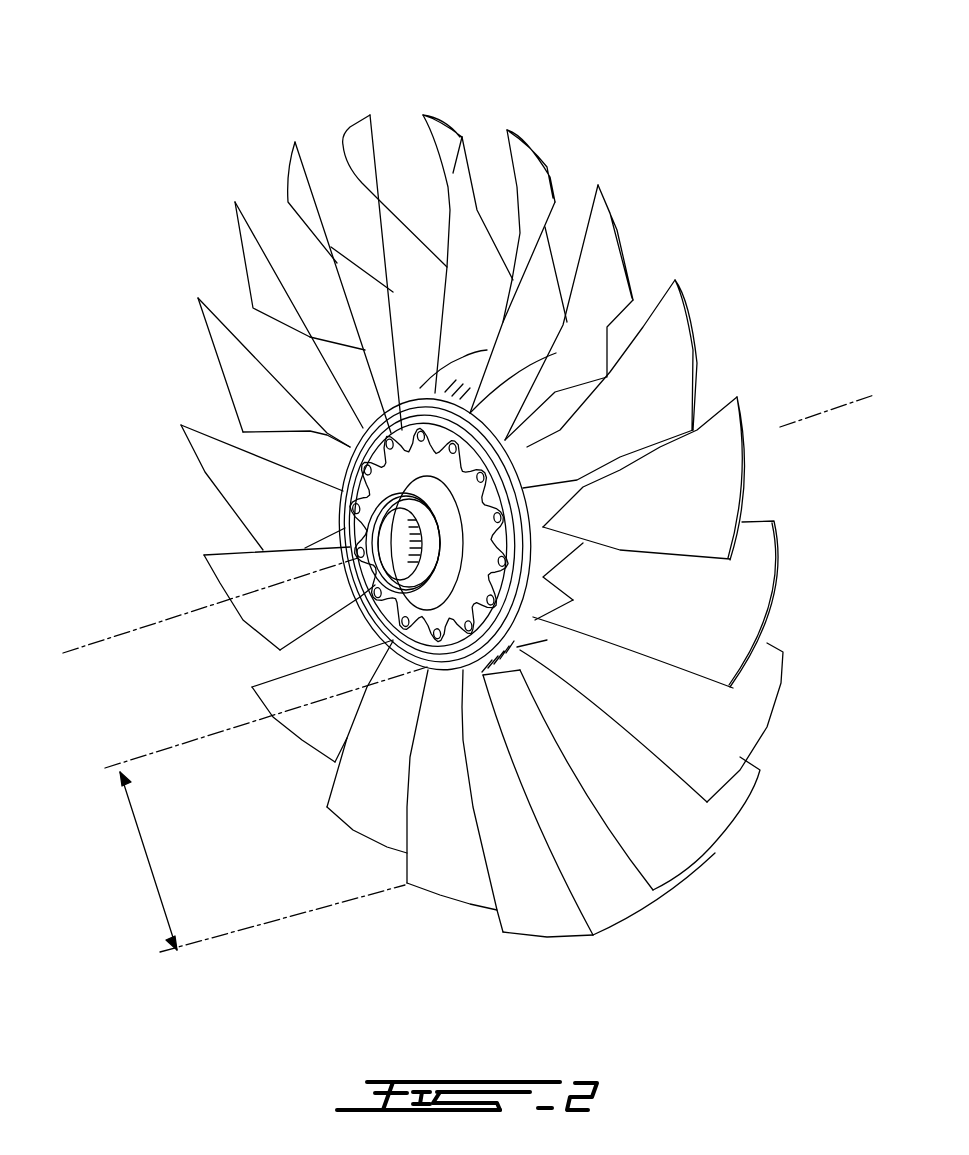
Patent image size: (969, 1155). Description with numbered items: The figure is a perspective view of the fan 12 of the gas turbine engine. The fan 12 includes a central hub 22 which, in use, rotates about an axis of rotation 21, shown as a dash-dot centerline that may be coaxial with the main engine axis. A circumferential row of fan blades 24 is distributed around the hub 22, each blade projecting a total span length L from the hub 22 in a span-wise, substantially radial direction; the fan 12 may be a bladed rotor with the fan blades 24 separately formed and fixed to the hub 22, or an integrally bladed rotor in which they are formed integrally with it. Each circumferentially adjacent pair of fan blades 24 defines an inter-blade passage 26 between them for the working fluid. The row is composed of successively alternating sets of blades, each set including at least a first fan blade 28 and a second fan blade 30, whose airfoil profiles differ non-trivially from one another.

The fan 12 is at (130, 151).
The axis of rotation 21 is at (143, 630).
The central hub 22 is at (530, 446).
The fan blades 24 is at (176, 508).
The inter-blade passages 26 is at (413, 203).
The first fan blades 28 is at (448, 127).
The second fan blades 30 is at (357, 133).